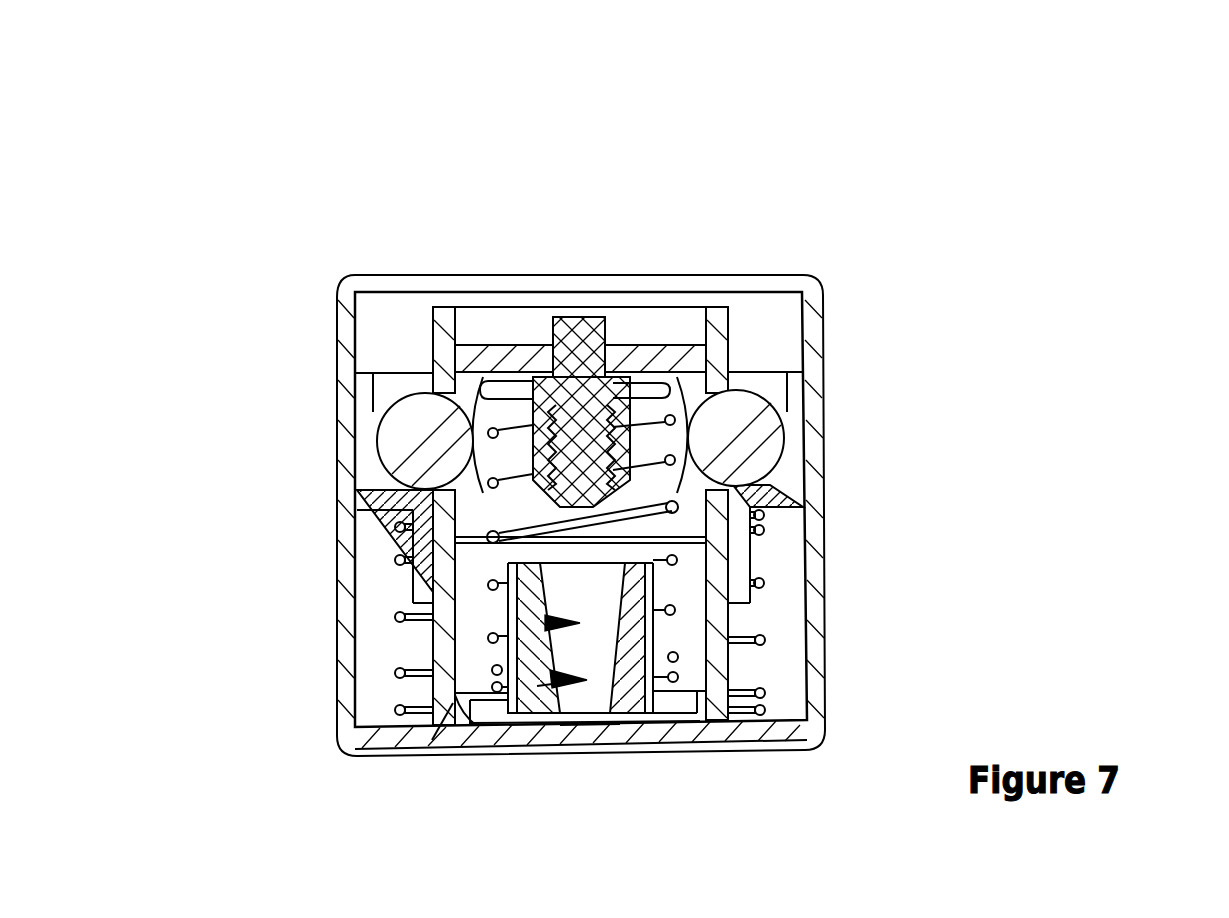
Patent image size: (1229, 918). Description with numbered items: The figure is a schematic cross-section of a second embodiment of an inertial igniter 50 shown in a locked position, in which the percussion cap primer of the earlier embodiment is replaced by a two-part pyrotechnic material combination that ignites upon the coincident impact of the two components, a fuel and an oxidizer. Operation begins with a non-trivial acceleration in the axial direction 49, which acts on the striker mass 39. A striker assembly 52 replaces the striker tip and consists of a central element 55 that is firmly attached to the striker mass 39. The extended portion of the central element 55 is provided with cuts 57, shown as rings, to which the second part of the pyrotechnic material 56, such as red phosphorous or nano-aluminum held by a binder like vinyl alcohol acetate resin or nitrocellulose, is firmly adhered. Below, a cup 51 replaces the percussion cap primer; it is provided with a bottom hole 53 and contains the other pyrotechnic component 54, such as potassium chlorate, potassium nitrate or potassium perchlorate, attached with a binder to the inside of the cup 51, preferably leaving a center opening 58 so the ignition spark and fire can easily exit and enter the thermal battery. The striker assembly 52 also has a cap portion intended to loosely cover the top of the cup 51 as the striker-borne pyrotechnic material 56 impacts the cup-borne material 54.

The striker mass 39 is at (448, 423).
The axial direction 49 is at (574, 60).
The inertial igniter 50 is at (950, 300).
The cup 51 is at (690, 574).
The striker assembly 52 is at (495, 322).
The bottom hole 53 is at (603, 748).
The pyrotechnic material 54 is at (442, 732).
The central element 55 is at (603, 335).
The pyrotechnic material 56 is at (640, 493).
The cuts 57 is at (632, 418).
The center opening 58 is at (545, 625).